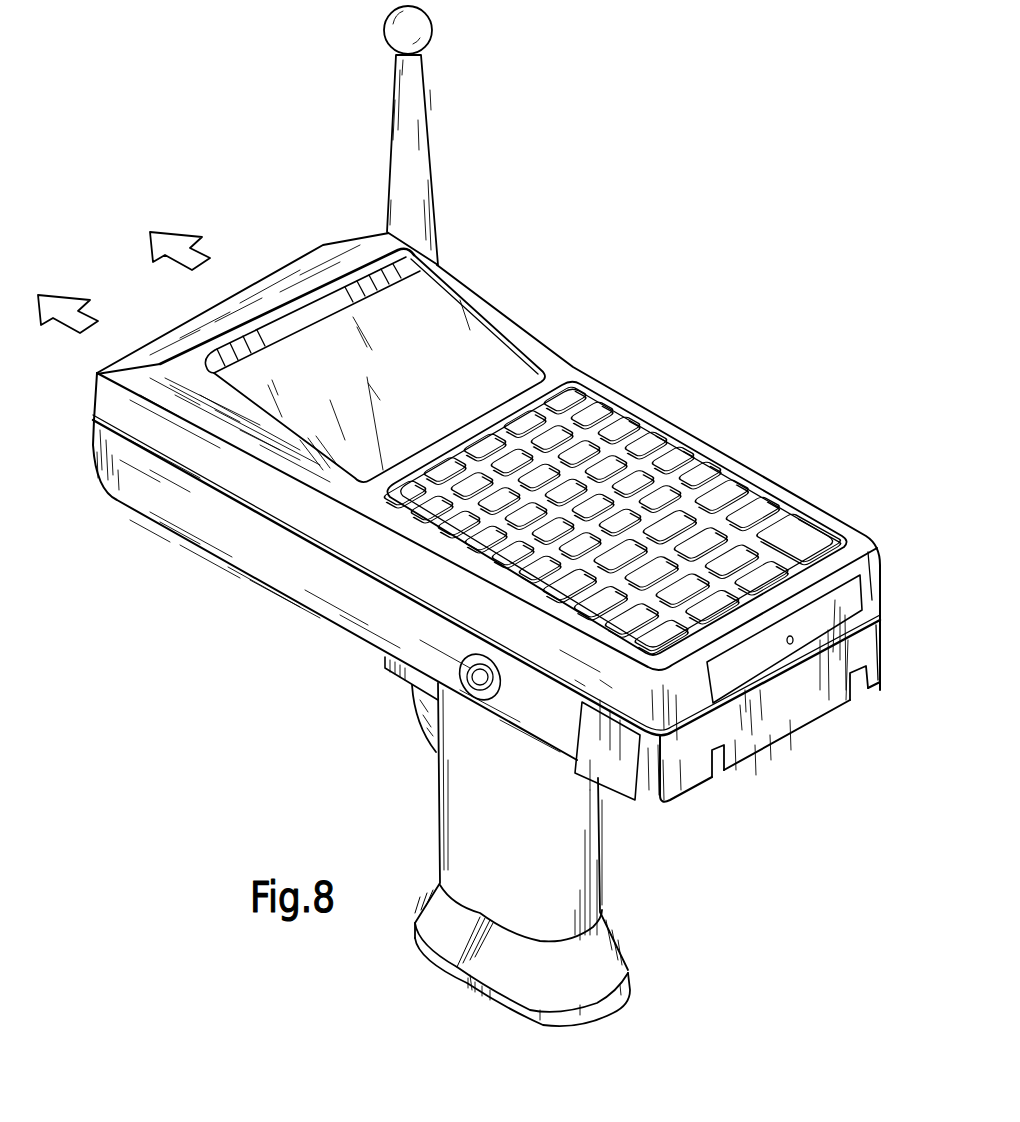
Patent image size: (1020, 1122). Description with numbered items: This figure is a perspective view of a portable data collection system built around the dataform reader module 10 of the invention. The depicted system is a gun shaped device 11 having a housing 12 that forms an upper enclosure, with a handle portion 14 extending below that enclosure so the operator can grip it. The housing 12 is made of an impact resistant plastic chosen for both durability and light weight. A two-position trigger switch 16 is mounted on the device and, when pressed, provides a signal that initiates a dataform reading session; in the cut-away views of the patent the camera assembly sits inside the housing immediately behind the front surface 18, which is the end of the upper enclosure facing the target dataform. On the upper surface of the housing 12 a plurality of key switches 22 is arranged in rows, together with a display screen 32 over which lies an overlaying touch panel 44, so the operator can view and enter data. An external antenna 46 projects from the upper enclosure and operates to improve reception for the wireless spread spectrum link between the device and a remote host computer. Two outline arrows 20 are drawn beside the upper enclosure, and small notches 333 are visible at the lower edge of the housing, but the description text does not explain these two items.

The dataform reader module 10 is at (486, 517).
The gun shaped device 11 is at (822, 483).
The housing 12 is at (882, 570).
The handle portion 14 is at (600, 840).
The two-position trigger switch 16 is at (420, 714).
The front surface 18 is at (303, 257).
The scanning direction arrows 20 is at (96, 322).
The key switches 22 is at (702, 472).
The display screen 32 is at (460, 295).
The touch panel 44 is at (416, 284).
The external antenna 46 is at (423, 80).
The notches 333 is at (857, 702).